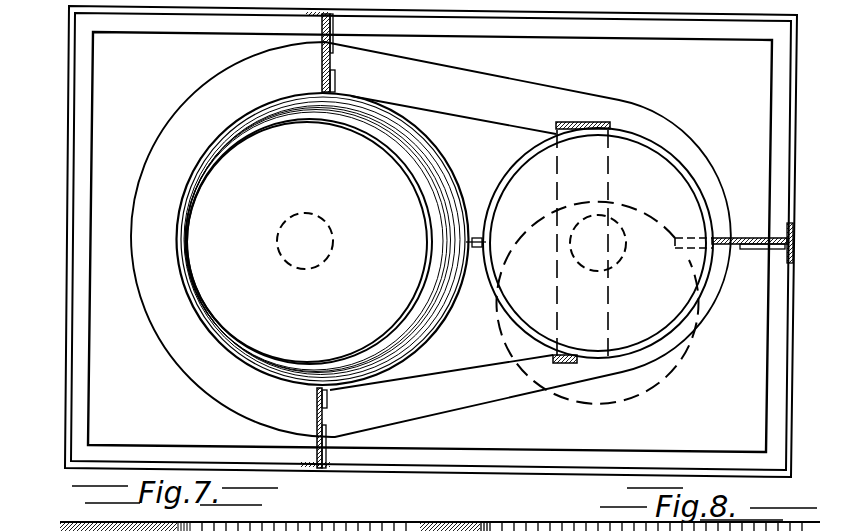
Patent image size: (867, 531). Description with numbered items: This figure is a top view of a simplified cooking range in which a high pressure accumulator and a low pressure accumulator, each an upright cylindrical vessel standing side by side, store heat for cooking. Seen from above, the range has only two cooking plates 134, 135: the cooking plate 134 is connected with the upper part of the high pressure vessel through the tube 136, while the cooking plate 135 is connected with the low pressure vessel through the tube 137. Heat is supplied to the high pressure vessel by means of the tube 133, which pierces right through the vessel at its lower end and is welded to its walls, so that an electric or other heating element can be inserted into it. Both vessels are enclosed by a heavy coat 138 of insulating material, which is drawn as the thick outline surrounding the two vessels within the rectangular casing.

In FIG. 7, the tube 133 is at (552, 362).
In FIG. 7, the cooking plate 134 is at (598, 266).
In FIG. 8, the cooking plate 134 is at (530, 512).
In FIG. 7, the cooking plate 135 is at (323, 239).
In FIG. 8, the cooking plate 135 is at (332, 522).
In FIG. 7, the tube 136 is at (617, 228).
In FIG. 7, the tube 137 is at (328, 227).
In FIG. 7, the coat of insulating material 138 is at (193, 132).